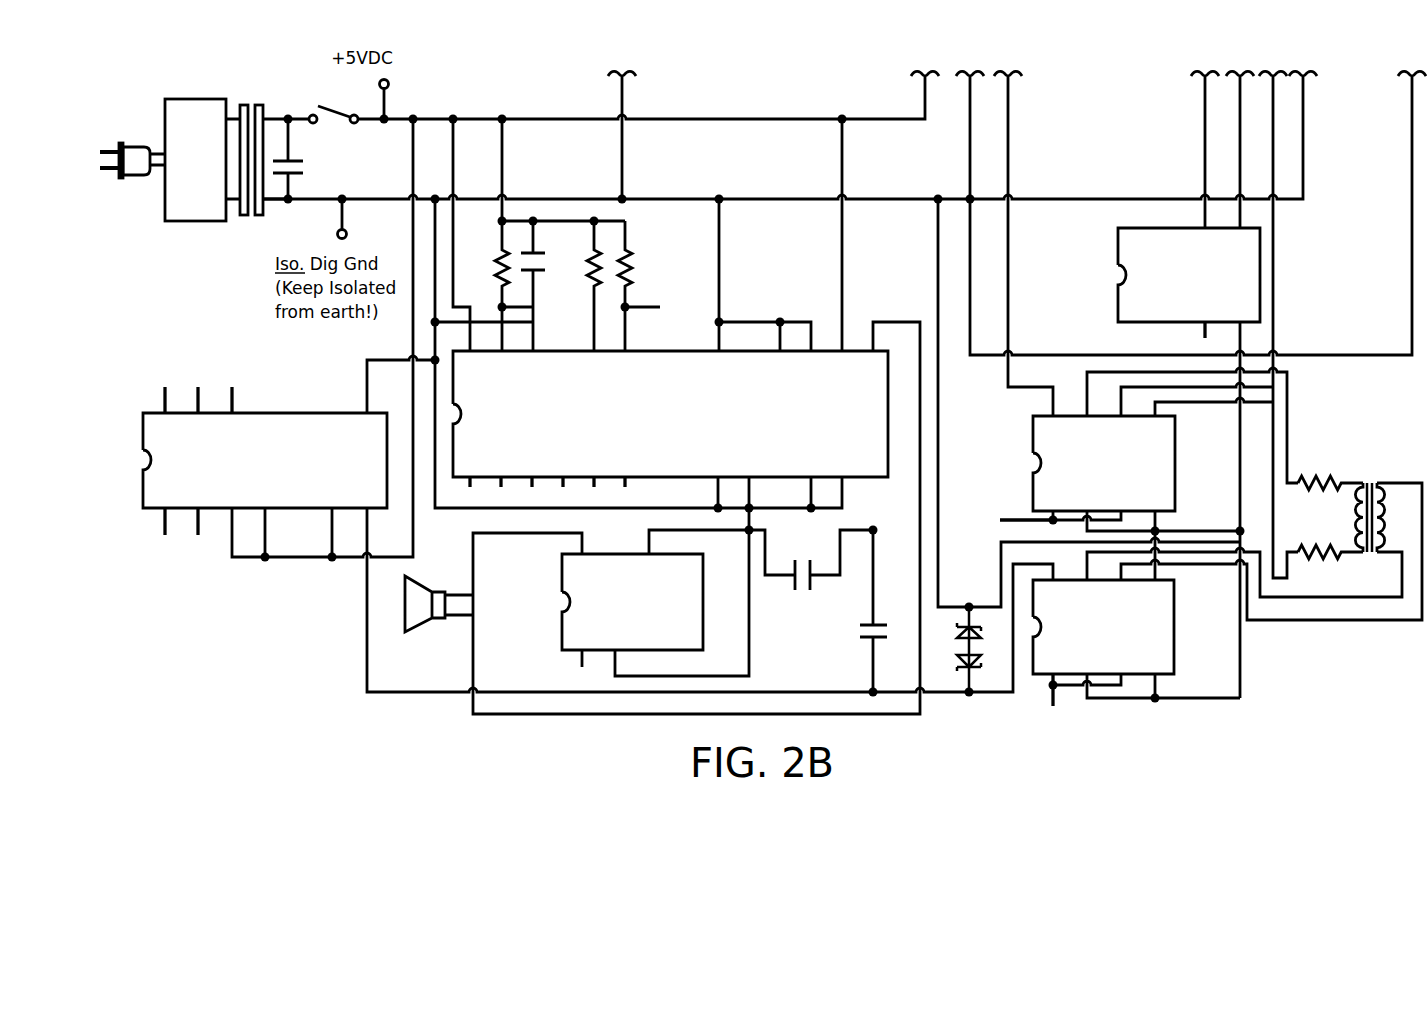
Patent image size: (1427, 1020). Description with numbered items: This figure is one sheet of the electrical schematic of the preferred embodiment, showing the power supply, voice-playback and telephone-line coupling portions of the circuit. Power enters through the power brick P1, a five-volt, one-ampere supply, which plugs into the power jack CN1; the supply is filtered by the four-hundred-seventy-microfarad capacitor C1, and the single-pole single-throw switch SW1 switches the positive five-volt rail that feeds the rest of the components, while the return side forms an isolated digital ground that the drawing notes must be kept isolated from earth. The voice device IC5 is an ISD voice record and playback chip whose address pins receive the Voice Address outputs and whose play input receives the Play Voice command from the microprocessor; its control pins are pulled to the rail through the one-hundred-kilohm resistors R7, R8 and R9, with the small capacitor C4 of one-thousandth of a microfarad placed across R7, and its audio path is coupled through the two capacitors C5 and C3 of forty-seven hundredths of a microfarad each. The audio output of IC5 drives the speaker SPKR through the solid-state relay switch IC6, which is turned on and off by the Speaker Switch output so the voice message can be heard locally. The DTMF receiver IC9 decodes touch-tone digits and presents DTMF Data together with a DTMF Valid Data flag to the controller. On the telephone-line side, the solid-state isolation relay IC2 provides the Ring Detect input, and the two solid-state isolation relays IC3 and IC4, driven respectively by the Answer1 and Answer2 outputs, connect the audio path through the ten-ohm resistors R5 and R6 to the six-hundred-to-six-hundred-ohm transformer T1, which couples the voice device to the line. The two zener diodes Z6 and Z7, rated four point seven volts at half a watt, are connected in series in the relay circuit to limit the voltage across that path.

The power brick P1 is at (170, 160).
The power jack CN1 is at (261, 175).
The capacitor C1 is at (301, 159).
The SPST switch SW1 is at (336, 126).
The capacitor C4 is at (541, 264).
The resistor R7 is at (490, 264).
The resistor R8 is at (582, 286).
The resistor R9 is at (636, 286).
The capacitor C5 is at (805, 585).
The capacitor C3 is at (860, 611).
The zener diode Z6 is at (957, 631).
The zener diode Z7 is at (957, 673).
The resistor R5 is at (1330, 471).
The resistor R6 is at (1330, 541).
The transformer T1 is at (1369, 531).
The speaker SPKR is at (431, 614).
The voice device IC5 is at (670, 413).
The DTMF receiver IC9 is at (265, 461).
The solid-state relay switch IC6 is at (632, 602).
The solid-state isolation relay IC2 is at (1189, 275).
The solid-state isolation relay IC3 is at (1104, 463).
The solid-state isolation relay IC4 is at (1103, 627).